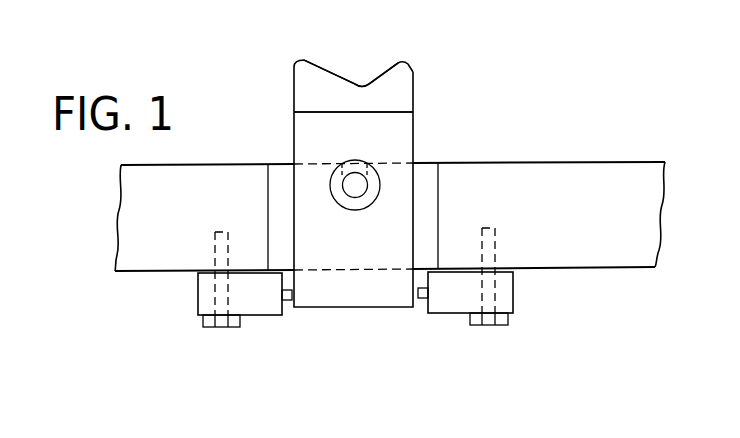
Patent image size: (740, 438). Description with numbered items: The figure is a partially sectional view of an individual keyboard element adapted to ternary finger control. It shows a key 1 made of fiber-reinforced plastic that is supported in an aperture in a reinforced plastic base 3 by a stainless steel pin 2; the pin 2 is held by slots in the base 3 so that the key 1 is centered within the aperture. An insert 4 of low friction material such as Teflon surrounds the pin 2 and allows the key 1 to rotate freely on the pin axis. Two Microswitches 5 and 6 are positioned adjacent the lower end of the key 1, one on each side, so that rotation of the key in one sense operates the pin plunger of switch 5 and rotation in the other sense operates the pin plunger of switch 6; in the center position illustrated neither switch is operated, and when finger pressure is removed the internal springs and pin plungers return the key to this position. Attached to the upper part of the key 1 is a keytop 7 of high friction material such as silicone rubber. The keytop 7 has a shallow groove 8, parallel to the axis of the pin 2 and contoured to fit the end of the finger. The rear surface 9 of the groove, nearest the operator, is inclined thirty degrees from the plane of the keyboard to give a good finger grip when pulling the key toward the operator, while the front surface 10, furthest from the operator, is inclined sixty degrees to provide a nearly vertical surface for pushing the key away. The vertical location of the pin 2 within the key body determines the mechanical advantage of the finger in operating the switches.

The key 1 is at (400, 152).
The pin 2 is at (347, 183).
The base 3 is at (558, 262).
The insert 4 is at (348, 207).
The Microswitch 5 is at (452, 298).
The Microswitch 6 is at (268, 307).
The keytop 7 is at (303, 98).
The shallow groove 8 is at (363, 85).
The rear surface of the groove 9 is at (331, 55).
The front surface 10 is at (378, 47).